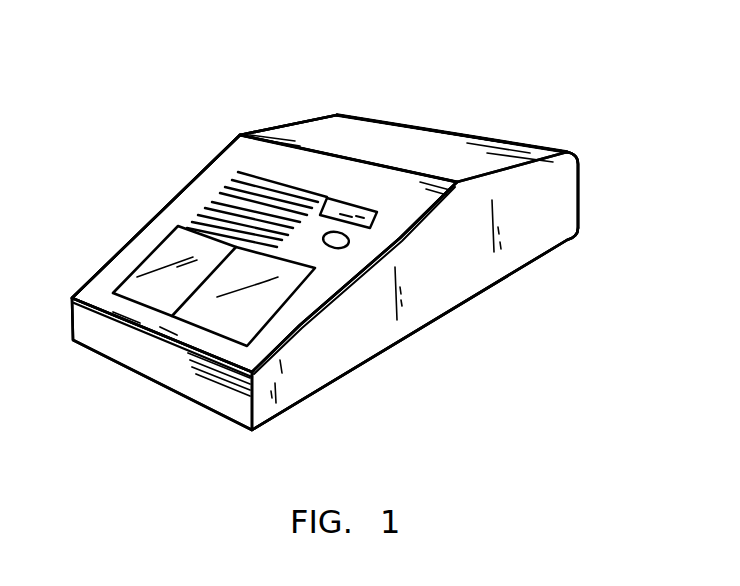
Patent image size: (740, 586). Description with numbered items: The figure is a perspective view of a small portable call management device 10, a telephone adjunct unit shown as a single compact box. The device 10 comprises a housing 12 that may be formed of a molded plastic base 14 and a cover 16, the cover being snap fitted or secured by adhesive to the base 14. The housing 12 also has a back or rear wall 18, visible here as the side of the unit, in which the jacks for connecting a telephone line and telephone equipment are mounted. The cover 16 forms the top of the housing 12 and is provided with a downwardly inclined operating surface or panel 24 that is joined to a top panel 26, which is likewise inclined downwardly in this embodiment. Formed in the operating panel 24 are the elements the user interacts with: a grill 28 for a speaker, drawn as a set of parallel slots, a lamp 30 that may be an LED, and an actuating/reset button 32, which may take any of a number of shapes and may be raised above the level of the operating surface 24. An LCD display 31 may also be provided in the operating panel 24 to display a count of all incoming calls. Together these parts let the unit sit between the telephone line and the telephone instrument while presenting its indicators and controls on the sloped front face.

The call management device 10 is at (546, 63).
The housing 12 is at (156, 392).
The base 14 is at (508, 289).
The cover 16 is at (225, 148).
The rear wall 18 is at (580, 191).
The operating panel 24 is at (107, 275).
The top panel 26 is at (337, 125).
The grill 28 is at (217, 195).
The lamp 30 is at (341, 245).
The LCD display 31 is at (377, 216).
The actuating/reset button 32 is at (168, 257).